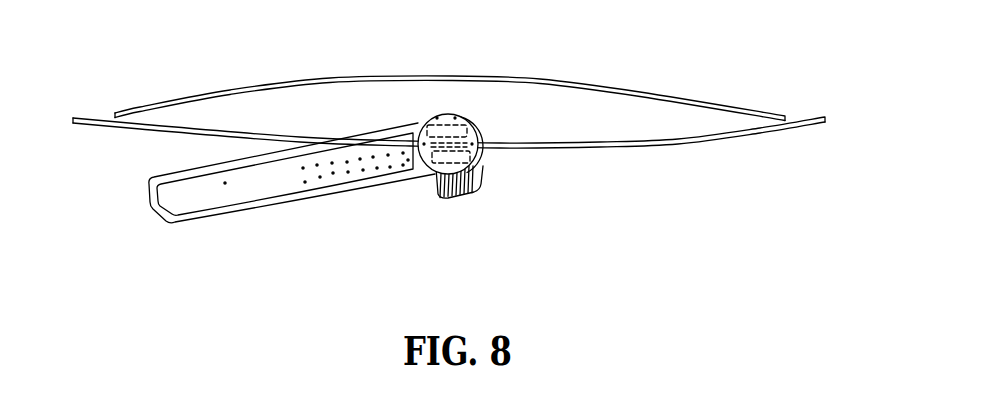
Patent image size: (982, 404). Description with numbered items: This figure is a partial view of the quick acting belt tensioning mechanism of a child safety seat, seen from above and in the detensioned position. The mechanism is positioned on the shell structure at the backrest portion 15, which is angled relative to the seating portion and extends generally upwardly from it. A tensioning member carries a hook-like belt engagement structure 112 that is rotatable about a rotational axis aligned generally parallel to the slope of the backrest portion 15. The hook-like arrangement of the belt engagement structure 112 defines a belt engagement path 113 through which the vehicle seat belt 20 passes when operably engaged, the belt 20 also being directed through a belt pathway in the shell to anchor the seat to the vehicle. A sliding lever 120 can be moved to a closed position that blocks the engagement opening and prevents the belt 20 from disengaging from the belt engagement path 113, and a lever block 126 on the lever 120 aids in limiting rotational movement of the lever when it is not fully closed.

The backrest portion 15 is at (543, 81).
The vehicle seat belt 20 is at (133, 132).
The belt engagement structure 112 is at (457, 86).
The belt engagement path 113 is at (437, 108).
The lever 120 is at (273, 208).
The lever block 126 is at (455, 197).